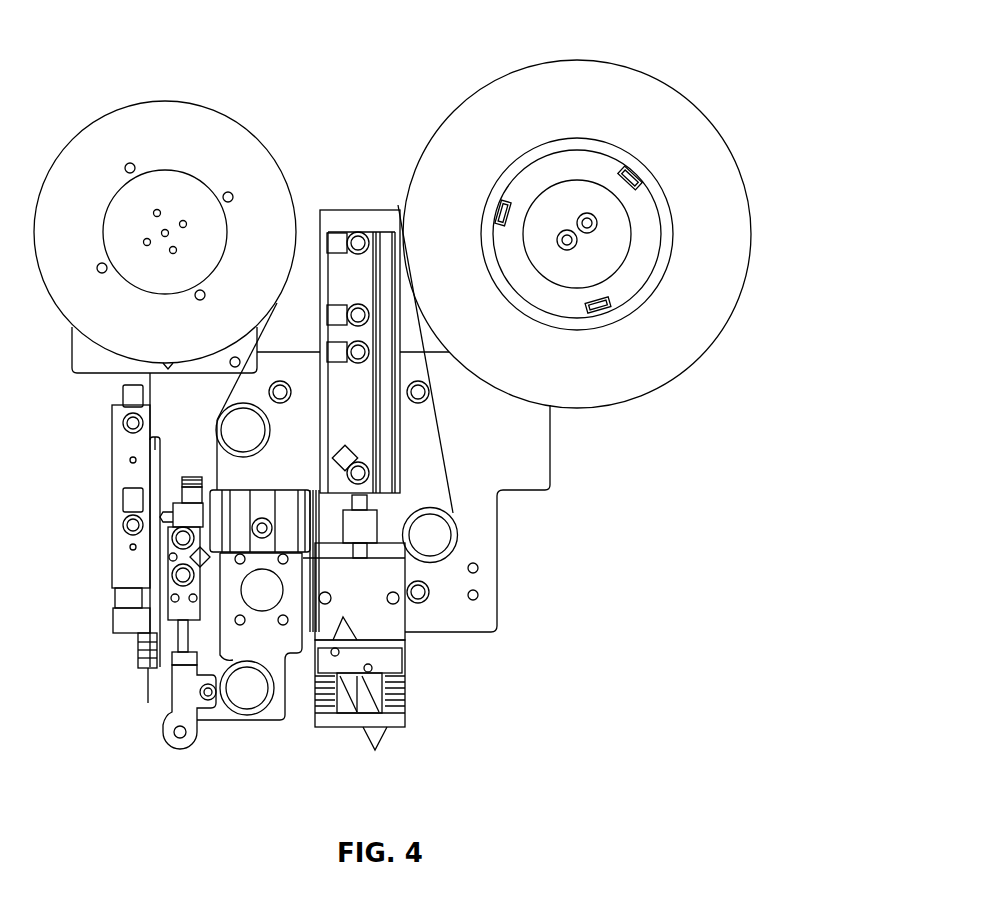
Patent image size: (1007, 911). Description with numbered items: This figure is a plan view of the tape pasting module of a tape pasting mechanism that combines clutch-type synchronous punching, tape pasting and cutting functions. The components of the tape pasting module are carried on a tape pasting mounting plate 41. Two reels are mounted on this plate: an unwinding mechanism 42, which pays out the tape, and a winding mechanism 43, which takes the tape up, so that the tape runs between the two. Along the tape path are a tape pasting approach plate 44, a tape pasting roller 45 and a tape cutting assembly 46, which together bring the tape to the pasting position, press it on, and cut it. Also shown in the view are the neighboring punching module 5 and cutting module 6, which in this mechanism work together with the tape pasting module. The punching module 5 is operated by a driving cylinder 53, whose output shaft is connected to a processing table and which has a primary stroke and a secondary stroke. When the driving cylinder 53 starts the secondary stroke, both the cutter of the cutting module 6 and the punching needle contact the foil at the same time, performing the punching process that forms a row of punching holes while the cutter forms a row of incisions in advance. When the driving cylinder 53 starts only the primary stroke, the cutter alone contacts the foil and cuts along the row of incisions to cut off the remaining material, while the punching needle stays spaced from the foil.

The tape pasting mounting plate 41 is at (523, 480).
The unwinding mechanism 42 is at (581, 98).
The winding mechanism 43 is at (190, 203).
The tape pasting approach plate 44 is at (252, 697).
The tape pasting roller 45 is at (182, 708).
The tape cutting assembly 46 is at (132, 477).
The driving cylinder 53 is at (380, 223).
The punching module 5 is at (382, 657).
The cutting module 6 is at (372, 702).